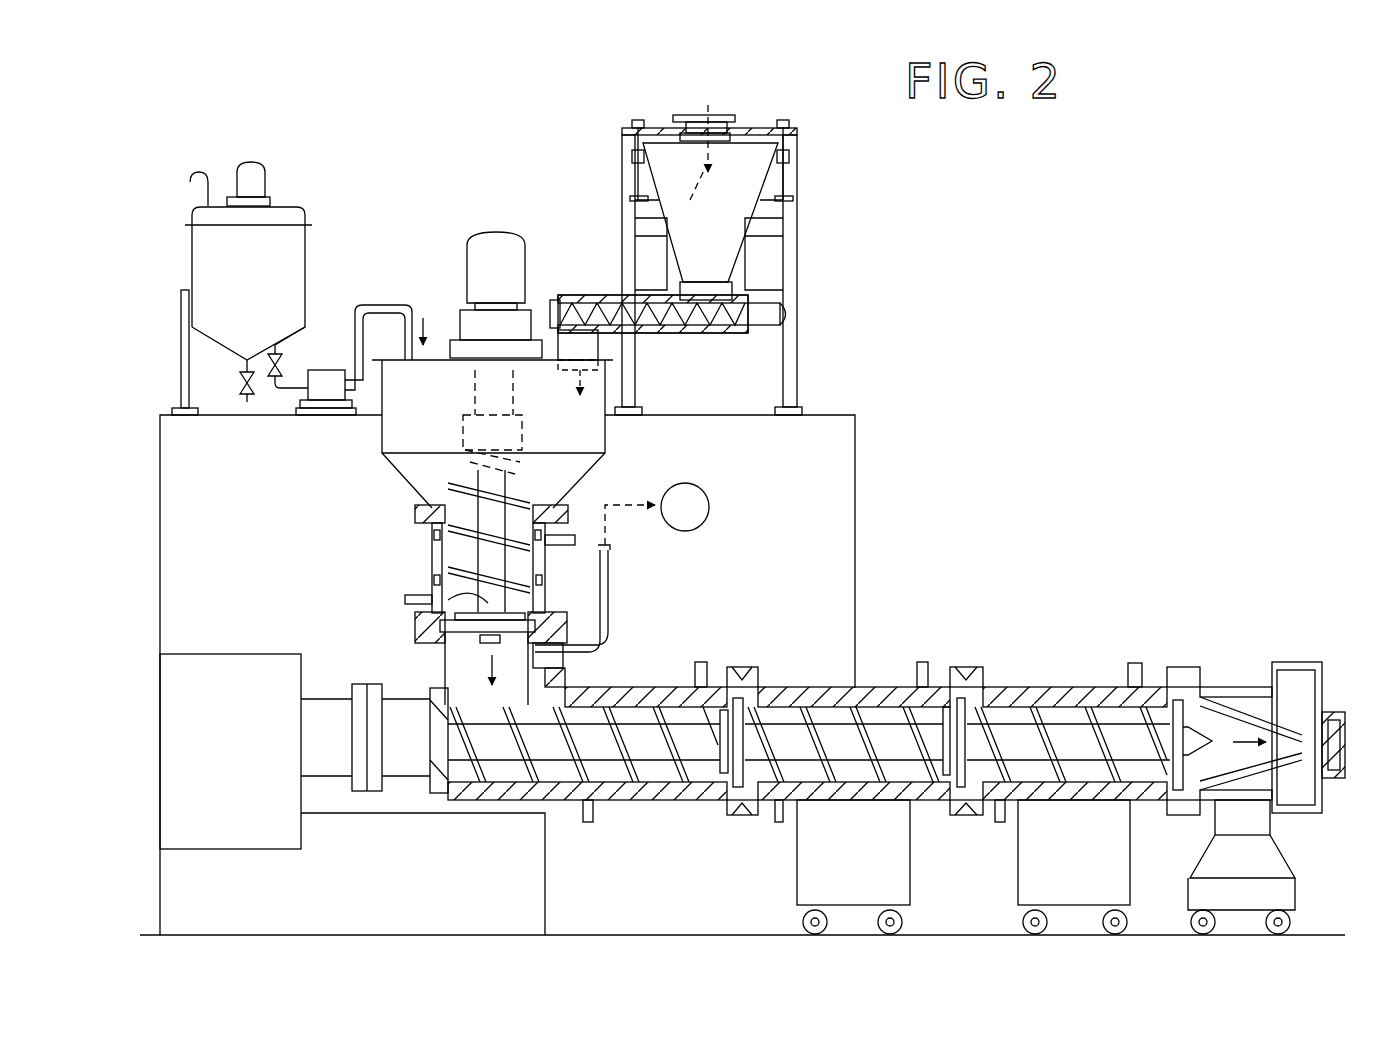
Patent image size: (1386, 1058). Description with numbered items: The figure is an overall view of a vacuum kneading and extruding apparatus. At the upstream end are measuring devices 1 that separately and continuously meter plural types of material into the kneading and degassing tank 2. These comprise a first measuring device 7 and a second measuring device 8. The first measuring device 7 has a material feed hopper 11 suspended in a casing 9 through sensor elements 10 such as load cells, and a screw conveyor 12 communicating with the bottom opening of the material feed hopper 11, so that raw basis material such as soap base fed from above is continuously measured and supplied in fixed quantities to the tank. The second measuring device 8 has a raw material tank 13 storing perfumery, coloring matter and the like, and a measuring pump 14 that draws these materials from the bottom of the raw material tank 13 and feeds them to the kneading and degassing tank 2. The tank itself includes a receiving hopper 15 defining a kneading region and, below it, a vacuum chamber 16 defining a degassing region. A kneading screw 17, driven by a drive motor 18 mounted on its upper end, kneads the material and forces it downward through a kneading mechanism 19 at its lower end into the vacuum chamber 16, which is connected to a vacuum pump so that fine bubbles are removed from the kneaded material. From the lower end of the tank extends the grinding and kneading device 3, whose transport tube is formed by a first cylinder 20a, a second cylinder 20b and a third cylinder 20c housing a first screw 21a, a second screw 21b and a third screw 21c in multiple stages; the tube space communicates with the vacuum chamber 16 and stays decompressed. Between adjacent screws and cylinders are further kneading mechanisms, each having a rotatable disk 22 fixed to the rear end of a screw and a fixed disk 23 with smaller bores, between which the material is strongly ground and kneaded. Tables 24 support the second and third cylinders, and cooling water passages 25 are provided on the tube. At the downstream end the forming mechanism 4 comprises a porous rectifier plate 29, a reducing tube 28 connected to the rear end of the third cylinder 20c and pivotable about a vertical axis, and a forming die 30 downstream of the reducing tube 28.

The measuring devices 1 is at (455, 173).
The kneading and degassing tank 2 is at (355, 532).
The grinding and kneading device 3 is at (893, 650).
The forming mechanism 4 is at (1275, 610).
The first measuring device 7 is at (598, 192).
The second measuring device 8 is at (316, 205).
The casing 9 is at (792, 130).
The sensor elements 10 is at (628, 152).
The material feed hopper 11 is at (725, 255).
The screw conveyor 12 is at (705, 334).
The raw material tank 13 is at (305, 260).
The measuring pump 14 is at (321, 370).
The receiving hopper 15 is at (560, 478).
The vacuum chamber 16 is at (445, 662).
The kneading screw 17 is at (445, 548).
The drive motor 18 is at (470, 238).
The kneading mechanism 19 is at (430, 596).
The first cylinder 20a is at (655, 687).
The second cylinder 20b is at (860, 800).
The third cylinder 20c is at (1062, 690).
The first screw 21a is at (627, 687).
The second screw 21b is at (818, 687).
The third screw 21c is at (1085, 710).
The rotatable disk 22 is at (545, 560).
The fixed disk 23 is at (545, 595).
The tables 24 is at (800, 888).
The cooling water passages 25 is at (780, 820).
The reducing tube 28 is at (1245, 700).
The porous rectifier plate 29 is at (1222, 690).
The forming die 30 is at (1296, 705).